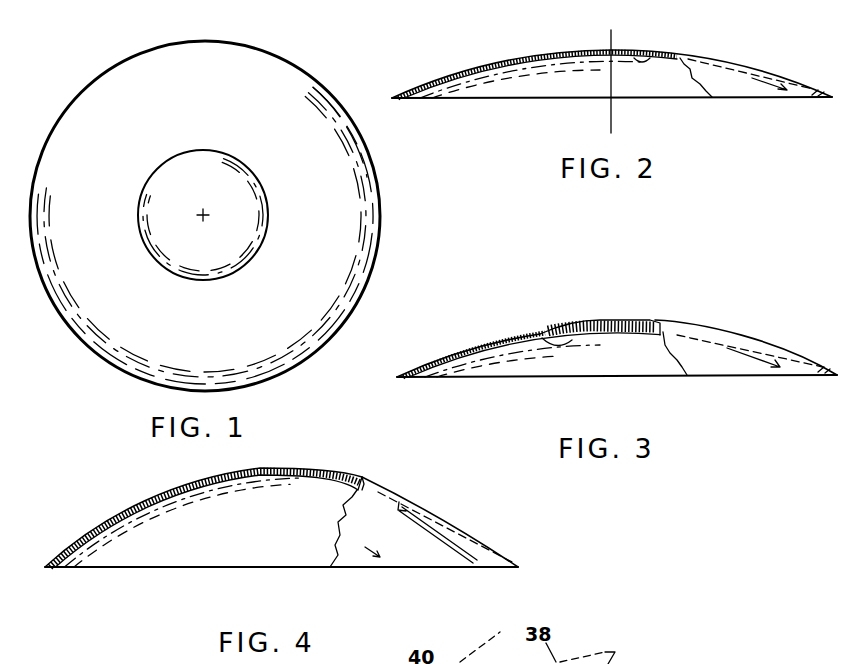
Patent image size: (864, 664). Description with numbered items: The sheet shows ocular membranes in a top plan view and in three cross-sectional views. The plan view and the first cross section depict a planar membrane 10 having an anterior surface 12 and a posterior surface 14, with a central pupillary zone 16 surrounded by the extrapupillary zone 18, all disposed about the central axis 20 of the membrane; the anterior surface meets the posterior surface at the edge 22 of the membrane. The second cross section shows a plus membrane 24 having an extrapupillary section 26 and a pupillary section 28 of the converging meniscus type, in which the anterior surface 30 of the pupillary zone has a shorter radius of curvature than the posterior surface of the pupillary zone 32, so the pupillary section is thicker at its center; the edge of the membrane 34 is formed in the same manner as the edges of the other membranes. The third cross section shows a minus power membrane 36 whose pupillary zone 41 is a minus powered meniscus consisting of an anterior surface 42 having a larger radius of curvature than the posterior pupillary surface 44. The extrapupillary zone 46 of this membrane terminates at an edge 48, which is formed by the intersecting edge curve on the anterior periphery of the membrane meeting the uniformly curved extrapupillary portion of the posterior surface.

In FIG. 1, the planar membrane 10 is at (110, 54).
In FIG. 2, the planar membrane 10 is at (458, 55).
In FIG. 2, the anterior surface 12 is at (596, 50).
In FIG. 2, the lens body section 14 is at (658, 52).
In FIG. 1, the central optical zone 16 is at (214, 203).
In FIG. 1, the extrapupillary zone 18 is at (326, 177).
In FIG. 1, the central axis 20 is at (207, 218).
In FIG. 2, the central axis 20 is at (613, 113).
In FIG. 2, the edge 22 is at (392, 98).
In FIG. 3, the plus membrane 24 is at (727, 329).
In FIG. 3, the extrapupillary section 26 is at (440, 355).
In FIG. 3, the pupillary section 28 is at (597, 310).
In FIG. 3, the anterior surface of the pupillary zone 30 is at (624, 320).
In FIG. 3, the posterior surface of the pupillary zone 32 is at (532, 340).
In FIG. 3, the edge of the membrane 34 is at (397, 377).
In FIG. 4, the minus power membrane 36 is at (384, 474).
In FIG. 4, the pupillary zone 41 is at (327, 463).
In FIG. 4, the anterior surface 42 is at (270, 466).
In FIG. 4, the posterior pupillary surface 44 is at (327, 483).
In FIG. 4, the extrapupillary zone 46 is at (453, 518).
In FIG. 4, the edge 48 is at (518, 567).